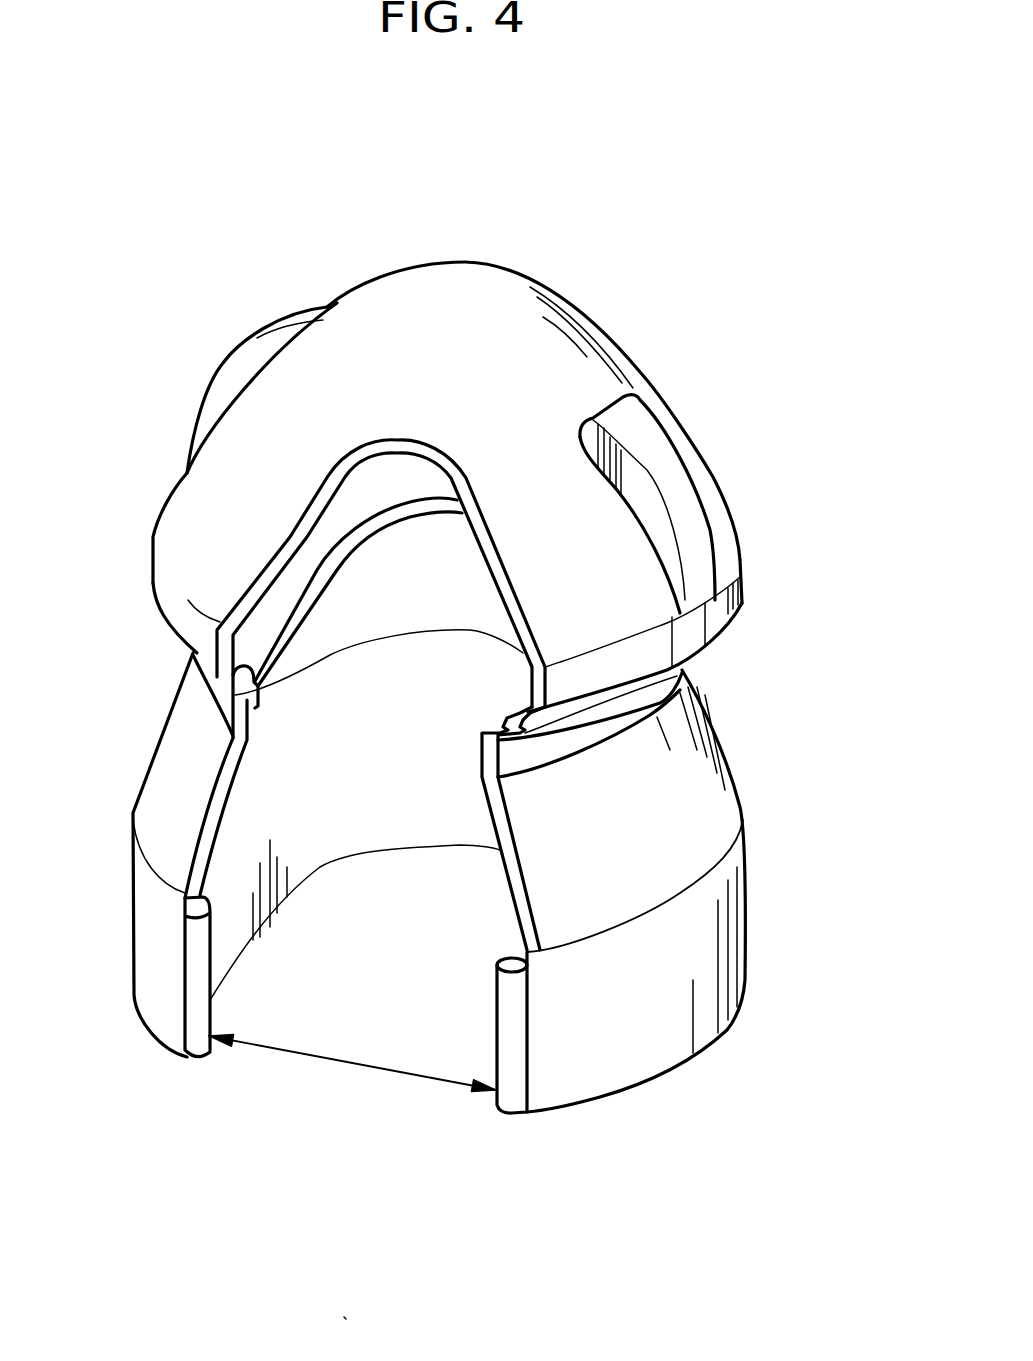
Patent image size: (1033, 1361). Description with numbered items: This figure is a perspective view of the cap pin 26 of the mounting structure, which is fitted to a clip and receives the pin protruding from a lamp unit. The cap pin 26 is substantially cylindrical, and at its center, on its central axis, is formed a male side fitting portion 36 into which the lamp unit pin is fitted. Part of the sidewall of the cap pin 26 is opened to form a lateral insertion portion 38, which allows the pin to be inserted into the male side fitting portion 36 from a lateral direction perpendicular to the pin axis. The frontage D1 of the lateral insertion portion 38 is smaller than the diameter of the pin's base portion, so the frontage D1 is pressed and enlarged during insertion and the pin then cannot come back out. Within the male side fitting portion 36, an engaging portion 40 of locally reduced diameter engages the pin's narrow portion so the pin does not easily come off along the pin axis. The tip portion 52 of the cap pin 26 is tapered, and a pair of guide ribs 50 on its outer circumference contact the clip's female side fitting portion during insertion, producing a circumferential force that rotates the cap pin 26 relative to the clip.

The cap pin 26 is at (638, 1174).
The male side fitting portion 36 is at (425, 984).
The lateral insertion portion 38 is at (187, 1015).
The engaging portion 40 is at (235, 695).
The guide ribs 50 is at (257, 346).
The tip portion 52 is at (497, 282).
The frontage D1 is at (346, 1062).